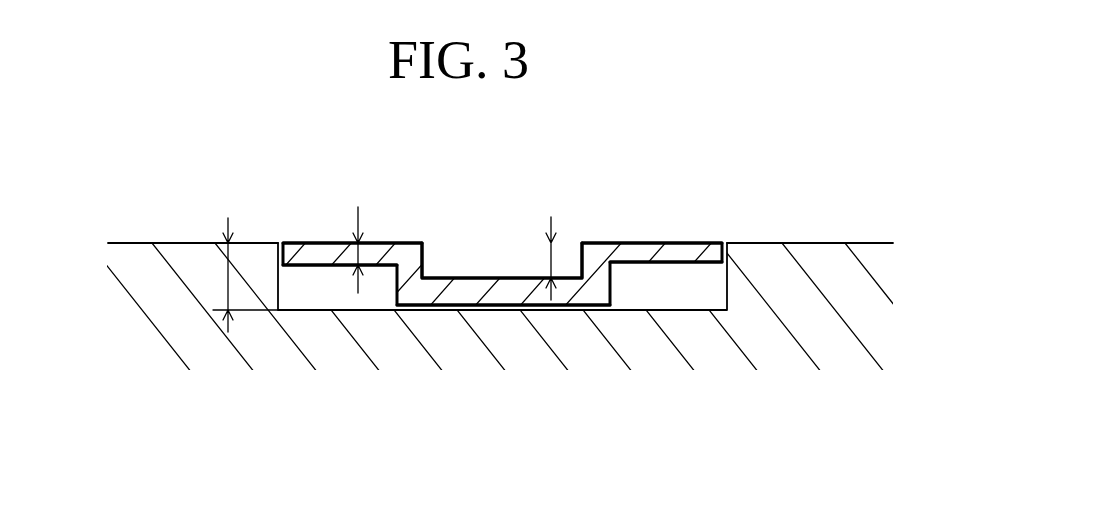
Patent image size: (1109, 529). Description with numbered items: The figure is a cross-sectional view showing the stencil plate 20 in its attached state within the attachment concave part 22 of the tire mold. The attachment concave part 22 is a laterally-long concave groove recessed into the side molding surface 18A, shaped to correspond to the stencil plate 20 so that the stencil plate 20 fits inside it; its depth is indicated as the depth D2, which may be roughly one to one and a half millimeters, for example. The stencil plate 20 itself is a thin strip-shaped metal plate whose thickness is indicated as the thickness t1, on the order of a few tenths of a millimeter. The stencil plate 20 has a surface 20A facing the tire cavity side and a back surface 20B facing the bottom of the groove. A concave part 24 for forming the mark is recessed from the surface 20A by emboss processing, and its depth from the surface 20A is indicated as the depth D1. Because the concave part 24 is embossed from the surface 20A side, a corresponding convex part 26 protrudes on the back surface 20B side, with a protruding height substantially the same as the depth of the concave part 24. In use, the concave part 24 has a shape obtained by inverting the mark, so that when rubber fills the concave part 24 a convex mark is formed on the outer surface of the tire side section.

The side molding surface 18A is at (807, 241).
The stencil plate 20 is at (629, 211).
The surface of the stencil plate 20A is at (662, 243).
The back surface of the stencil plate 20B is at (659, 263).
The attachment concave part 22 is at (304, 300).
The concave part 24 is at (424, 258).
The convex part 26 is at (496, 304).
The depth of the concave part D1 is at (550, 260).
The depth of the attachment concave part D2 is at (228, 280).
The thickness of the metal plate t1 is at (357, 256).